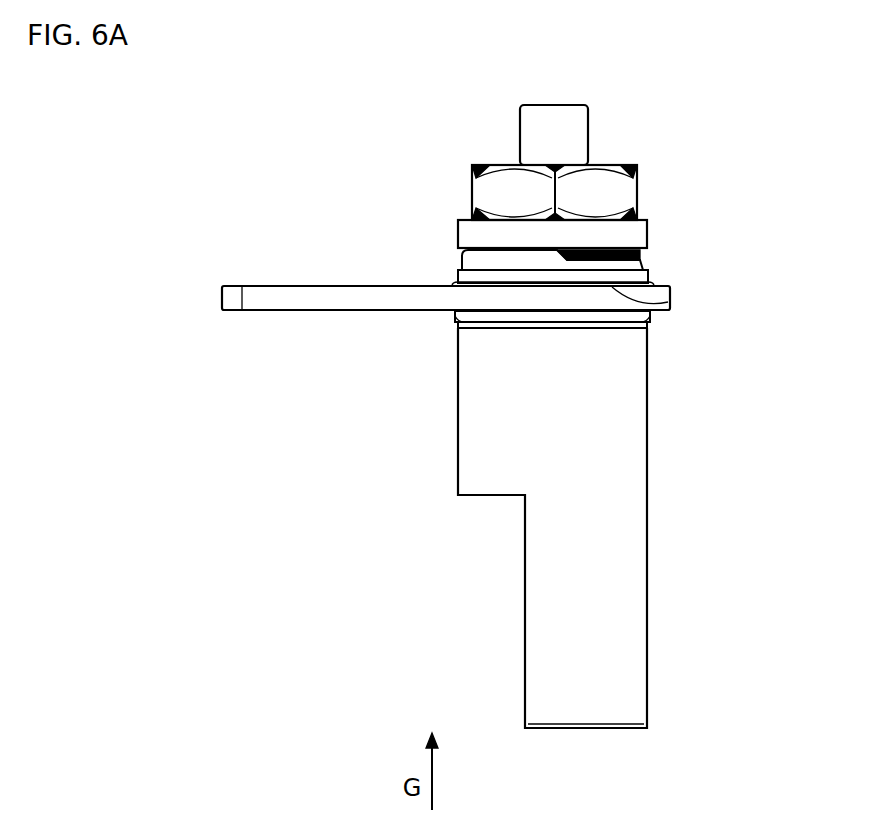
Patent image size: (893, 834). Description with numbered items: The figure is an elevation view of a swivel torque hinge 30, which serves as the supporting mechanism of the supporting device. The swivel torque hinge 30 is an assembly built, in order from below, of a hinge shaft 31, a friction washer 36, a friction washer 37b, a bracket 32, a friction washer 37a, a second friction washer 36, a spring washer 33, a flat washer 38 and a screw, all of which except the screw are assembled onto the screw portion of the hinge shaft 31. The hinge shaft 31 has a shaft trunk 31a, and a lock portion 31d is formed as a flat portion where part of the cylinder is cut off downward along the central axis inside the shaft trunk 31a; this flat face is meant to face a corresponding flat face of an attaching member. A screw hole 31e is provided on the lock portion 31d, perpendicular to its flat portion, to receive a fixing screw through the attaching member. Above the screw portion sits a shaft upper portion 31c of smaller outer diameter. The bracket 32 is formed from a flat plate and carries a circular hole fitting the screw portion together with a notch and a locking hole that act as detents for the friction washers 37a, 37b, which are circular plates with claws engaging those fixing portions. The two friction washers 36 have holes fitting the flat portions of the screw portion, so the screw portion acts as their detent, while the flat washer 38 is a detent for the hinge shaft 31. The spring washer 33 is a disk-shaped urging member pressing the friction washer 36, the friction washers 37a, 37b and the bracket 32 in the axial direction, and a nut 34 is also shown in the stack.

The swivel torque hinge 30 is at (400, 517).
The hinge shaft 31 is at (618, 518).
The shaft trunk 31a is at (620, 413).
The shaft upper portion 31c is at (528, 140).
The lock portion 31d is at (525, 648).
The screw hole 31e is at (647, 610).
The bracket 32 is at (338, 303).
The spring washer 33 is at (462, 256).
The nut 34 is at (492, 205).
The friction washer 36 is at (645, 262).
The friction washer 37a is at (622, 293).
The friction washer 37b is at (640, 332).
The flat washer 38 is at (648, 222).